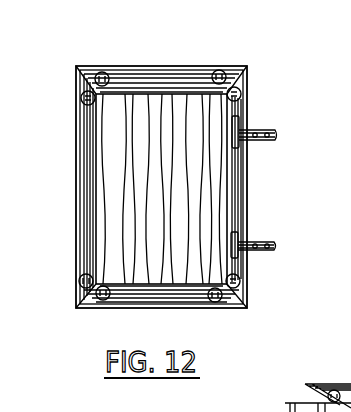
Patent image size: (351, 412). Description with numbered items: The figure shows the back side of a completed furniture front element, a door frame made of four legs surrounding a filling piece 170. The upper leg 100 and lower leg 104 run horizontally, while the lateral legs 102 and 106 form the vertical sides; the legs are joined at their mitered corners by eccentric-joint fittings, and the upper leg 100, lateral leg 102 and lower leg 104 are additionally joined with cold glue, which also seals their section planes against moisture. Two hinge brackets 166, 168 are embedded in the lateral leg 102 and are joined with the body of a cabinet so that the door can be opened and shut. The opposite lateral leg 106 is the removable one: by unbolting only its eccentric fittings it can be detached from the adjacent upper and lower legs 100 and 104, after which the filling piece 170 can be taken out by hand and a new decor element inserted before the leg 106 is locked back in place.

The upper leg 100 is at (158, 82).
The lateral leg 102 is at (243, 190).
The lower leg 104 is at (196, 302).
The lateral leg 106 is at (90, 156).
The hinge bracket 166 is at (244, 131).
The hinge bracket 168 is at (250, 252).
The filling piece 170 is at (120, 204).